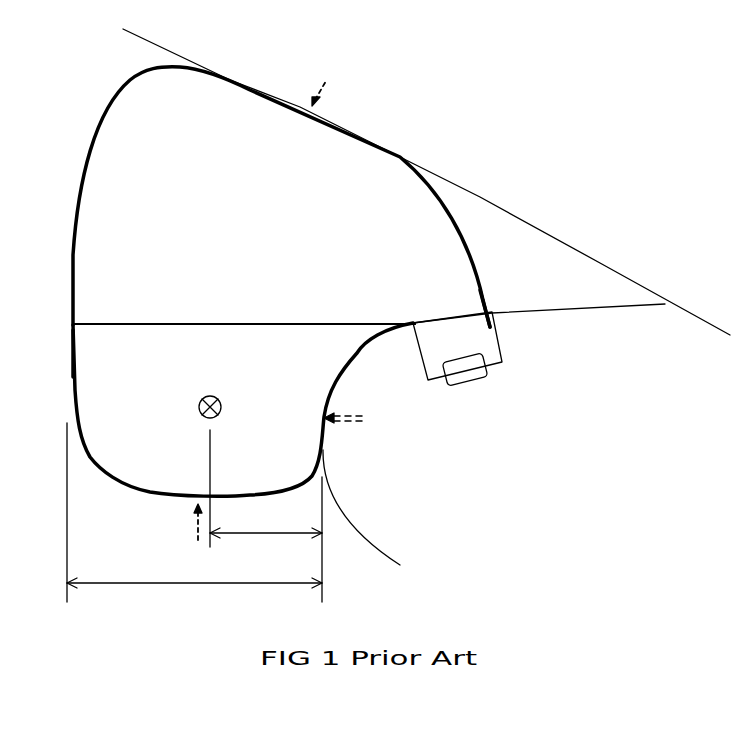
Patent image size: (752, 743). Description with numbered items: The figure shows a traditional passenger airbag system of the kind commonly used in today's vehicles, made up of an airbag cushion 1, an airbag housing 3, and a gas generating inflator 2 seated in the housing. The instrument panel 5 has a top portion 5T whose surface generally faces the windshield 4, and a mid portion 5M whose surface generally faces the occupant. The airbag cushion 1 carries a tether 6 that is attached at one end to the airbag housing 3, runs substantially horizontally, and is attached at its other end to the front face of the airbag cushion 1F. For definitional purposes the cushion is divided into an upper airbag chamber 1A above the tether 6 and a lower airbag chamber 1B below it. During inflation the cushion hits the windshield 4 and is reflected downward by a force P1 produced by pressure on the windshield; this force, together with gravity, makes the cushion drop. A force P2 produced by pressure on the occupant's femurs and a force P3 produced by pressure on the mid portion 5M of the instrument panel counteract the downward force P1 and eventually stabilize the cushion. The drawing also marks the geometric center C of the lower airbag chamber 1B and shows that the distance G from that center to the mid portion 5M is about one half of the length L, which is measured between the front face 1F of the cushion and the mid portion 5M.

The airbag cushion 1 is at (67, 275).
The upper airbag chamber 1A is at (211, 212).
The lower airbag chamber 1B is at (137, 421).
The front face of the airbag cushion 1F is at (70, 375).
The gas generating inflator 2 is at (475, 382).
The airbag housing 3 is at (423, 373).
The windshield 4 is at (498, 205).
The instrument panel 5 is at (545, 307).
The top portion of the instrument panel 5T is at (498, 308).
The mid portion of the instrument panel 5M is at (325, 453).
The tether 6 is at (145, 324).
The geometric center of the lower airbag chamber C is at (220, 471).
The distance G is at (266, 539).
The length L is at (194, 512).
The force P1 is at (332, 93).
The force P2 is at (181, 529).
The force P3 is at (359, 433).